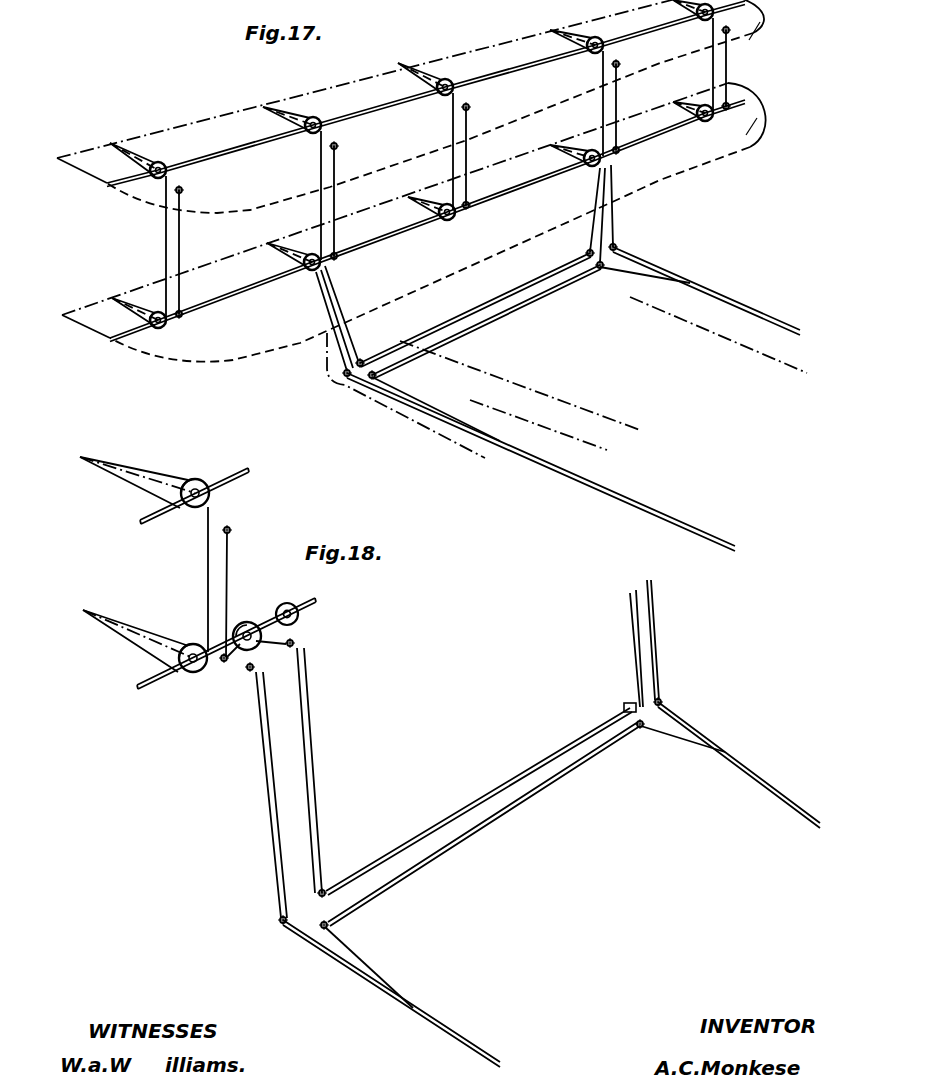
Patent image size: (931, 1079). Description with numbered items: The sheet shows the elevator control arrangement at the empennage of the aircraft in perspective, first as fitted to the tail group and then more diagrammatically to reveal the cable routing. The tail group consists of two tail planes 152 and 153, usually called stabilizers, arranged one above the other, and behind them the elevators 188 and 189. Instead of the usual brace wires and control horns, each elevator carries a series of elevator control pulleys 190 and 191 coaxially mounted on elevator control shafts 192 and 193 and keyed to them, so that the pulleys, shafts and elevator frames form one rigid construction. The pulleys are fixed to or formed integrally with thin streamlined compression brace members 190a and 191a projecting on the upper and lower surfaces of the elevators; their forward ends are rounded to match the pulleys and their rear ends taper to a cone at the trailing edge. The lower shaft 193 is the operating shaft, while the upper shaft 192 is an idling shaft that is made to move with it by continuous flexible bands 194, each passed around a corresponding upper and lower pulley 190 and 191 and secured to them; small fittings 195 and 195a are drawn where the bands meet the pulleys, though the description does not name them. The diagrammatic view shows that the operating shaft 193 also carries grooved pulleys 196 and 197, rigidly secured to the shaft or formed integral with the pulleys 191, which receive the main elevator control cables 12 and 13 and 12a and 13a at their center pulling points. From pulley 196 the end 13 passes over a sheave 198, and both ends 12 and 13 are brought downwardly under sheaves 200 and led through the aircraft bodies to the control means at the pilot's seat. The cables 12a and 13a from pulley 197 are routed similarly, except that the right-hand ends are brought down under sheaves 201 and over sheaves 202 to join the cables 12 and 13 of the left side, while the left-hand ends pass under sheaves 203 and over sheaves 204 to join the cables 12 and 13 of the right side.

In FIG. 17, the main elevator control cable 12 is at (783, 318).
In FIG. 18, the main elevator control cable 12 is at (275, 758).
In FIG. 17, the main elevator control cable 13 is at (760, 325).
In FIG. 18, the main elevator control cable 13 is at (270, 836).
In FIG. 17, the main elevator control cable 12a is at (516, 310).
In FIG. 18, the main elevator control cable 12a is at (318, 736).
In FIG. 17, the main elevator control cable 13a is at (553, 283).
In FIG. 18, the main elevator control cable 13a is at (300, 778).
In FIG. 17, the tail plane 152 is at (752, 22).
In FIG. 17, the tail plane 153 is at (750, 118).
In FIG. 17, the elevator 188 is at (501, 45).
In FIG. 17, the elevator 189 is at (622, 122).
In FIG. 17, the elevator control pulley 190 is at (160, 160).
In FIG. 18, the elevator control pulley 190 is at (195, 480).
In FIG. 17, the compression brace member 190a is at (548, 34).
In FIG. 18, the compression brace member 190a is at (132, 468).
In FIG. 17, the elevator control pulley 191 is at (312, 254).
In FIG. 18, the elevator control pulley 191 is at (316, 603).
In FIG. 17, the compression brace member 191a is at (583, 160).
In FIG. 18, the compression brace member 191a is at (158, 658).
In FIG. 17, the elevator control shaft 192 is at (222, 150).
In FIG. 18, the elevator control shaft 192 is at (240, 475).
In FIG. 17, the elevator control shaft 193 is at (215, 300).
In FIG. 17, the continuous flexible band 194 is at (318, 163).
In FIG. 18, the continuous flexible band 194 is at (230, 590).
In FIG. 17, the cable fitting 195 is at (184, 192).
In FIG. 18, the cable fitting 195 is at (232, 531).
In FIG. 18, the lower cable fitting 195a is at (228, 665).
In FIG. 18, the grooved pulley 196 is at (246, 624).
In FIG. 18, the grooved pulley 197 is at (296, 606).
In FIG. 18, the sheave 198 is at (296, 646).
In FIG. 17, the sheave 200 is at (347, 378).
In FIG. 18, the sheave 200 is at (283, 926).
In FIG. 17, the sheave 201 is at (362, 360).
In FIG. 18, the sheave 201 is at (330, 887).
In FIG. 18, the sheave 202 is at (626, 705).
In FIG. 18, the sheave 203 is at (641, 730).
In FIG. 17, the sheave 204 is at (376, 377).
In FIG. 18, the sheave 204 is at (330, 923).